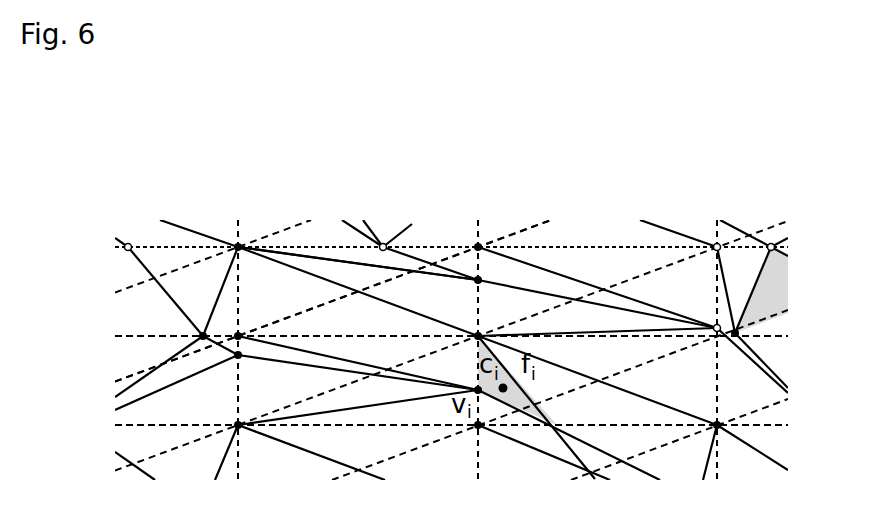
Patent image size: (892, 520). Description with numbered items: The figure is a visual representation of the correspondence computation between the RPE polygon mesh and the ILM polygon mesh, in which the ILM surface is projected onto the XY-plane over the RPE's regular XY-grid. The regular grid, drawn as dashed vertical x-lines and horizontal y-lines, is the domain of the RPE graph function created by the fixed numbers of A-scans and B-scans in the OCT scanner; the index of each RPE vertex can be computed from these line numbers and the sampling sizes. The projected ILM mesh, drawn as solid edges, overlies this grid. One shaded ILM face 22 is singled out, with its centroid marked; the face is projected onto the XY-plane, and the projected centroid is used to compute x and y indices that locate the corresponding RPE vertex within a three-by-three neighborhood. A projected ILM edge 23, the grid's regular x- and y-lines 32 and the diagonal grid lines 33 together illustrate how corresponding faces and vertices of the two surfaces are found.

The triangular face of the mesh 22 is at (432, 292).
The mesh edge 23 is at (350, 257).
The diagonal grid line 32 is at (343, 310).
The grid line 33 is at (277, 317).